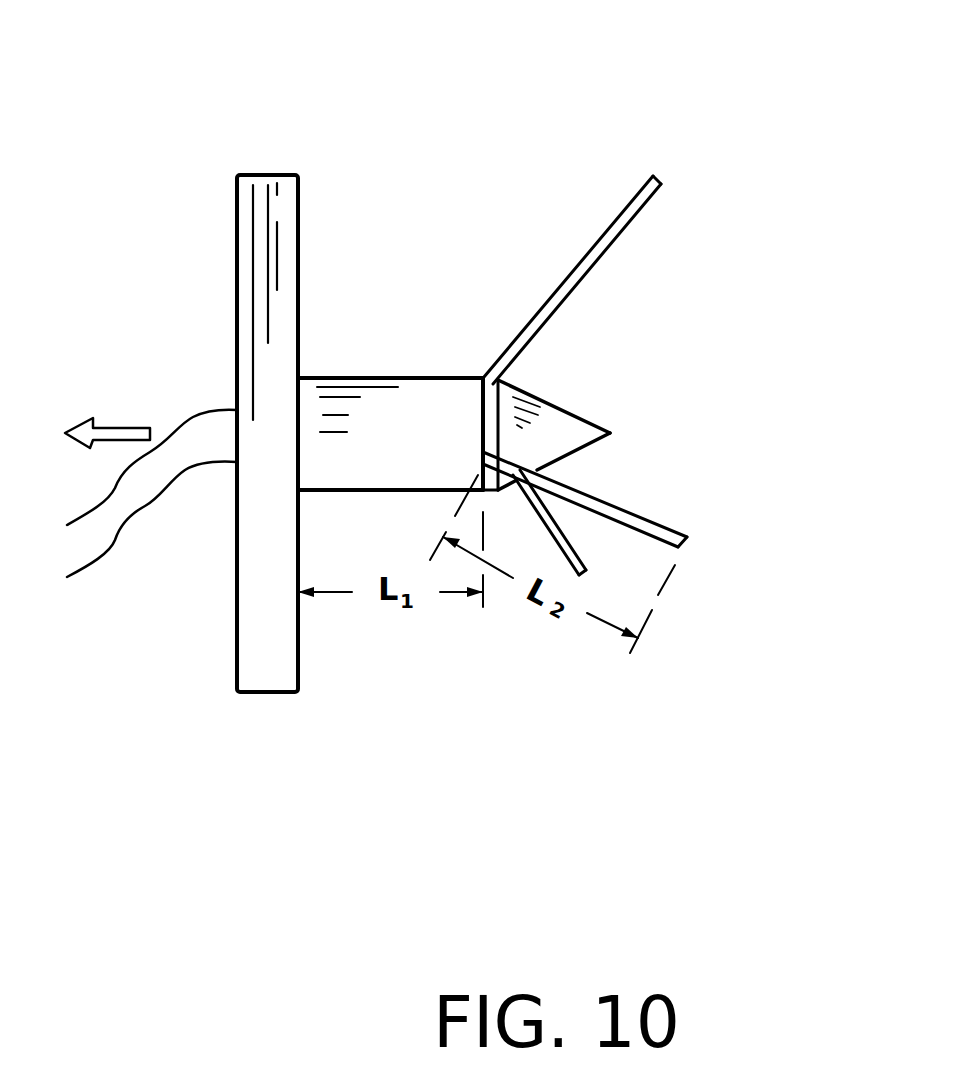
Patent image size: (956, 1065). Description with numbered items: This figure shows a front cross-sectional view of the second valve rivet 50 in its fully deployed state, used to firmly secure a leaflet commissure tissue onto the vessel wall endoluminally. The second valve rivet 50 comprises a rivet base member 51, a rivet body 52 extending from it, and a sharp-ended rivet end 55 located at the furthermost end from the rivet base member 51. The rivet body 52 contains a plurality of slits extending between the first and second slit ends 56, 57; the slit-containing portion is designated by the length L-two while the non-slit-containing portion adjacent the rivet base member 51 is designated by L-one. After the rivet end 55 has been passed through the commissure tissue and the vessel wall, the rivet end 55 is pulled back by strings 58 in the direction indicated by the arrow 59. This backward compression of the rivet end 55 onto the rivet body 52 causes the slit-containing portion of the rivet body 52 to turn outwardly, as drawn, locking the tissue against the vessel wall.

The second valve rivet 50 is at (398, 166).
The rivet base member 51 is at (284, 175).
The rivet body 52 is at (355, 377).
The sharp-ended rivet end 55 is at (595, 390).
The first slit end 56 is at (666, 170).
The second slit end 57 is at (478, 372).
The strings 58 is at (175, 486).
The arrow 59 is at (124, 420).